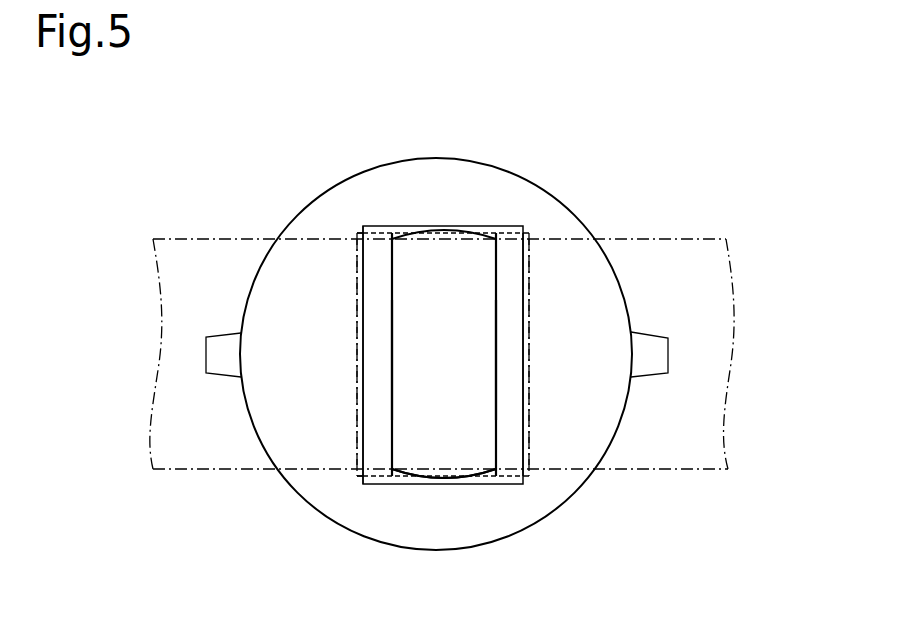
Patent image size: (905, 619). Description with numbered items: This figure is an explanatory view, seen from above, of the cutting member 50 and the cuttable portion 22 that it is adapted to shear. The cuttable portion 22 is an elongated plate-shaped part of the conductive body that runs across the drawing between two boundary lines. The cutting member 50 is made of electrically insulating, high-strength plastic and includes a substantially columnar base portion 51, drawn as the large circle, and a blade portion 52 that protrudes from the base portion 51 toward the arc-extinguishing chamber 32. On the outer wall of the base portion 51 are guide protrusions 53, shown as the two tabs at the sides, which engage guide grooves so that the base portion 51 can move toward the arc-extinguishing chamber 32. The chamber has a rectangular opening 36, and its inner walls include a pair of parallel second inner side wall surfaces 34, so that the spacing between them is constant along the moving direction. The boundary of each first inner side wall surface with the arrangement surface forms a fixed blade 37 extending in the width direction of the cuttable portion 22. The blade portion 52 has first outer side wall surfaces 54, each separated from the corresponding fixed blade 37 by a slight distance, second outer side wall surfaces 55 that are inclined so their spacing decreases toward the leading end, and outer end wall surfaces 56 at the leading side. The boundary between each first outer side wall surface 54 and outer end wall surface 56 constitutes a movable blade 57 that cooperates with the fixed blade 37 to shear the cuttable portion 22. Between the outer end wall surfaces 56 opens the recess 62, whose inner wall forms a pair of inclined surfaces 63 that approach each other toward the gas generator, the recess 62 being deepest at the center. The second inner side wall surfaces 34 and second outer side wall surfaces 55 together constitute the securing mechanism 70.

The cuttable portion 22 is at (700, 239).
The arc-extinguishing chamber 32 is at (425, 290).
The second inner side wall surfaces 34 is at (513, 232).
The opening 36 is at (425, 330).
The fixed blade 37 is at (357, 447).
The cutting member 50 is at (502, 113).
The base portion 51 is at (441, 177).
The blade portion 52 is at (475, 226).
The guide protrusions 53 is at (207, 349).
The first outer side wall surfaces 54 is at (443, 354).
The second outer side wall surfaces 55 is at (375, 227).
The outer end wall surfaces 56 is at (507, 403).
The movable blade 57 is at (357, 297).
The recess 62 is at (473, 383).
The inclined surfaces 63 is at (410, 337).
The securing mechanism 70 is at (421, 205).